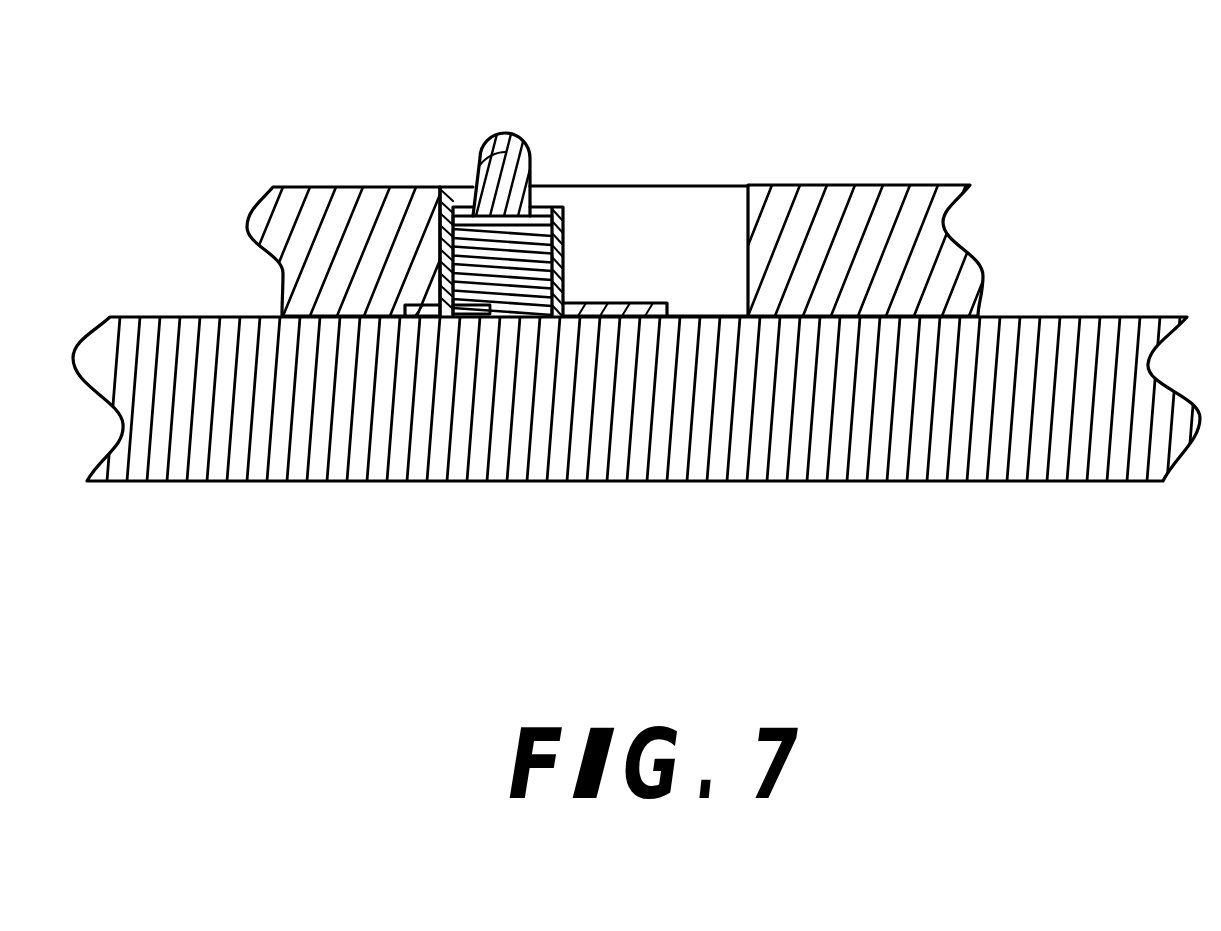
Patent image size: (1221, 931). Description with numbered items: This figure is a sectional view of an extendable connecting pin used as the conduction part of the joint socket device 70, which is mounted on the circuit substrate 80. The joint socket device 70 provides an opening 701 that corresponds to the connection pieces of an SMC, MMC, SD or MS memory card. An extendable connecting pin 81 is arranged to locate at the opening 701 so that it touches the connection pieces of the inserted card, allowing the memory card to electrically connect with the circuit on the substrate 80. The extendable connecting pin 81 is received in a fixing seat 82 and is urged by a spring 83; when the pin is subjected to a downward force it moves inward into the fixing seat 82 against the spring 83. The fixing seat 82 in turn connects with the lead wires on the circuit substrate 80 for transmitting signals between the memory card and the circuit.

The joint socket device 70 is at (948, 260).
The opening 701 is at (686, 236).
The substrate 80 is at (1108, 353).
The extendable connecting pin 81 is at (475, 165).
The fixing seat 82 is at (547, 188).
The spring 83 is at (450, 258).